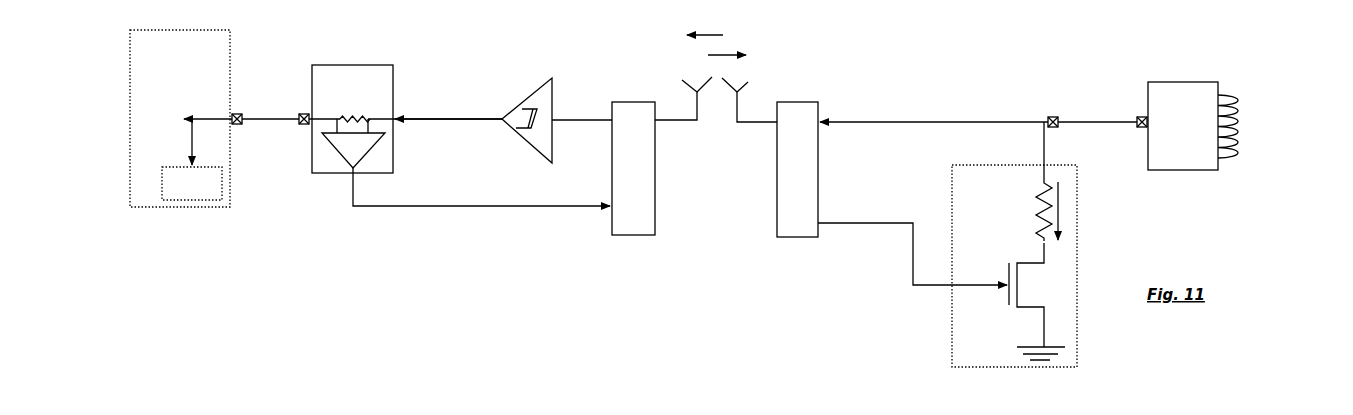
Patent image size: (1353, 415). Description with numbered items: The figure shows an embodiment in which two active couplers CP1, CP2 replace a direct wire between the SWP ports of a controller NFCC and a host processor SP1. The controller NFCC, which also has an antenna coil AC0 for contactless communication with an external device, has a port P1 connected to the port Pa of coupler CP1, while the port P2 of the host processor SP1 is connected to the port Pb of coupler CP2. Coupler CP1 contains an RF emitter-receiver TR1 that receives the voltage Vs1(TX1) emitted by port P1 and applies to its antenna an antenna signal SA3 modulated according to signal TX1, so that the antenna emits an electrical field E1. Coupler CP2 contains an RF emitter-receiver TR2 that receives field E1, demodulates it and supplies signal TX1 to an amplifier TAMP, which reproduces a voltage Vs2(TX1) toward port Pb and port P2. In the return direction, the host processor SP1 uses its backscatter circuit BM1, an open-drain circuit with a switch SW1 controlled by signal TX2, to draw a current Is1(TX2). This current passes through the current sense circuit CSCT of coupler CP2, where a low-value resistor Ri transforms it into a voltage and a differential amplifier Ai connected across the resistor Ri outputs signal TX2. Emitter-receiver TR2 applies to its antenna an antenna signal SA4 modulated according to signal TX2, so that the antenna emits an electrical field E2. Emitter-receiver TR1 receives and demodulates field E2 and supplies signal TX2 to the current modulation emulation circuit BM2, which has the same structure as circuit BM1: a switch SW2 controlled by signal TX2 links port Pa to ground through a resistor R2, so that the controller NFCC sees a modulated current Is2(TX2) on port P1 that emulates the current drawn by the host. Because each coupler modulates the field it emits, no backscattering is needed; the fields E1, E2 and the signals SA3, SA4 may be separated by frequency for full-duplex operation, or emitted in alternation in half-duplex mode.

The host processor SP1 is at (180, 118).
The backscatter circuit BM1 is at (192, 183).
The port P2 is at (239, 113).
The switch SW1 is at (270, 108).
The port Pb is at (303, 126).
The current sense circuit CSCT is at (351, 119).
The resistor Ri is at (355, 110).
The differential amplifier Ai is at (466, 162).
The amplifier TAMP is at (553, 88).
The signal TX1 is at (577, 111).
The signal TX2 is at (784, 237).
The RF emitter-receiver TR2 is at (633, 168).
The antenna signal SA4 is at (676, 106).
The electrical field E1 is at (717, 36).
The electrical field E2 is at (714, 56).
The antenna signal SA3 is at (757, 107).
The RF emitter-receiver TR1 is at (797, 169).
The coupler CP1 is at (830, 264).
The coupler CP2 is at (428, 244).
The port Pa is at (1050, 116).
The switch SW2 is at (995, 318).
The port P1 is at (1140, 116).
The controller NFCC is at (1183, 126).
The antenna coil AC0 is at (1240, 98).
The current modulation emulation circuit BM2 is at (1014, 244).
The resistor R2 is at (1028, 210).